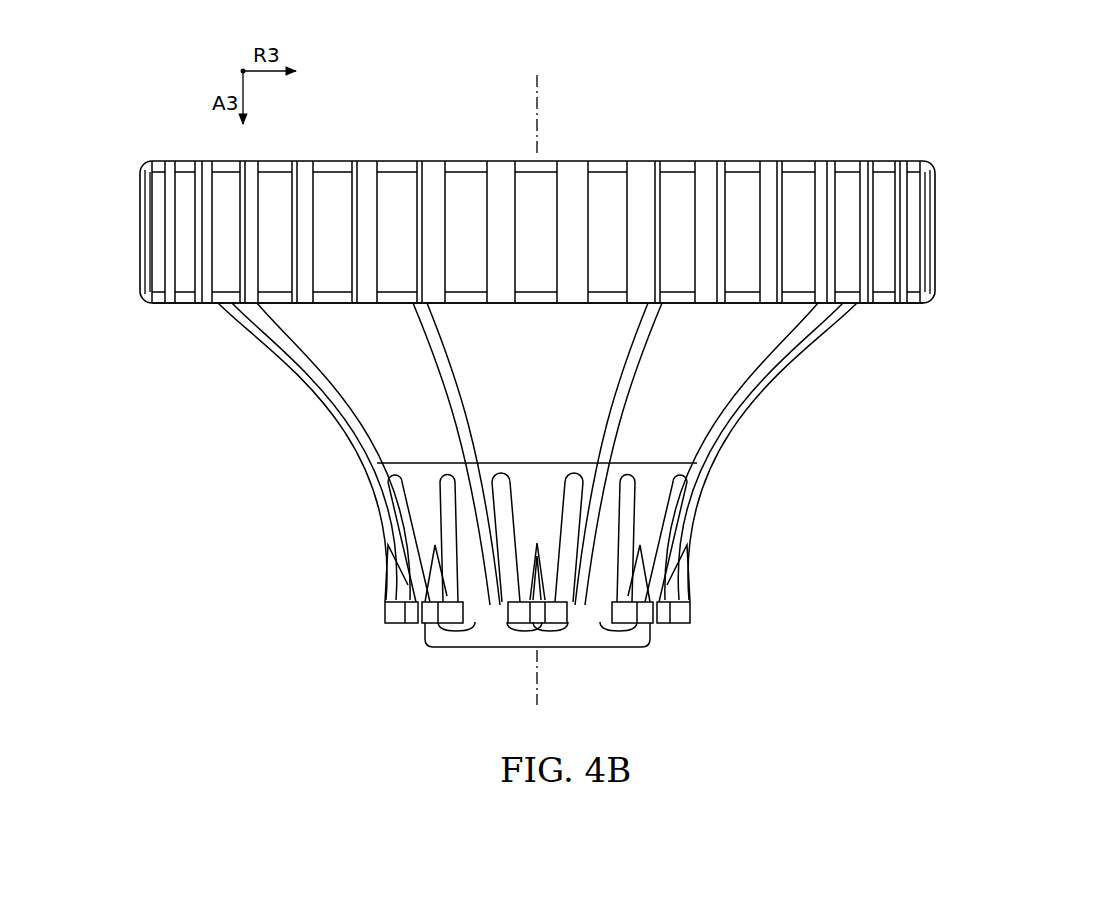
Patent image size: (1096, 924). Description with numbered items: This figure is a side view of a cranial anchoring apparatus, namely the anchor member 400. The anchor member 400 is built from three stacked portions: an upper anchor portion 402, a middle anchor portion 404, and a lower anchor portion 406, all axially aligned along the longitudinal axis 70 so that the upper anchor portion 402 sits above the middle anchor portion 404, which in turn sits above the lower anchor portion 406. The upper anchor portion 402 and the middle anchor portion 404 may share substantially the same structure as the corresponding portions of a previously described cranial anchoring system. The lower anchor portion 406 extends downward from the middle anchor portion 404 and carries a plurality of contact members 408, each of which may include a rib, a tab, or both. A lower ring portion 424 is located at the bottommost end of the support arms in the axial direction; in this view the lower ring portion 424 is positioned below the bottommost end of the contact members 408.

The anchor member 400 is at (884, 104).
The longitudinal axis 70 is at (534, 109).
The upper anchor portion 402 is at (134, 250).
The middle anchor portion 404 is at (188, 306).
The lower anchor portion 406 is at (278, 472).
The contact members 408 is at (652, 518).
The lower ring portion 424 is at (593, 636).